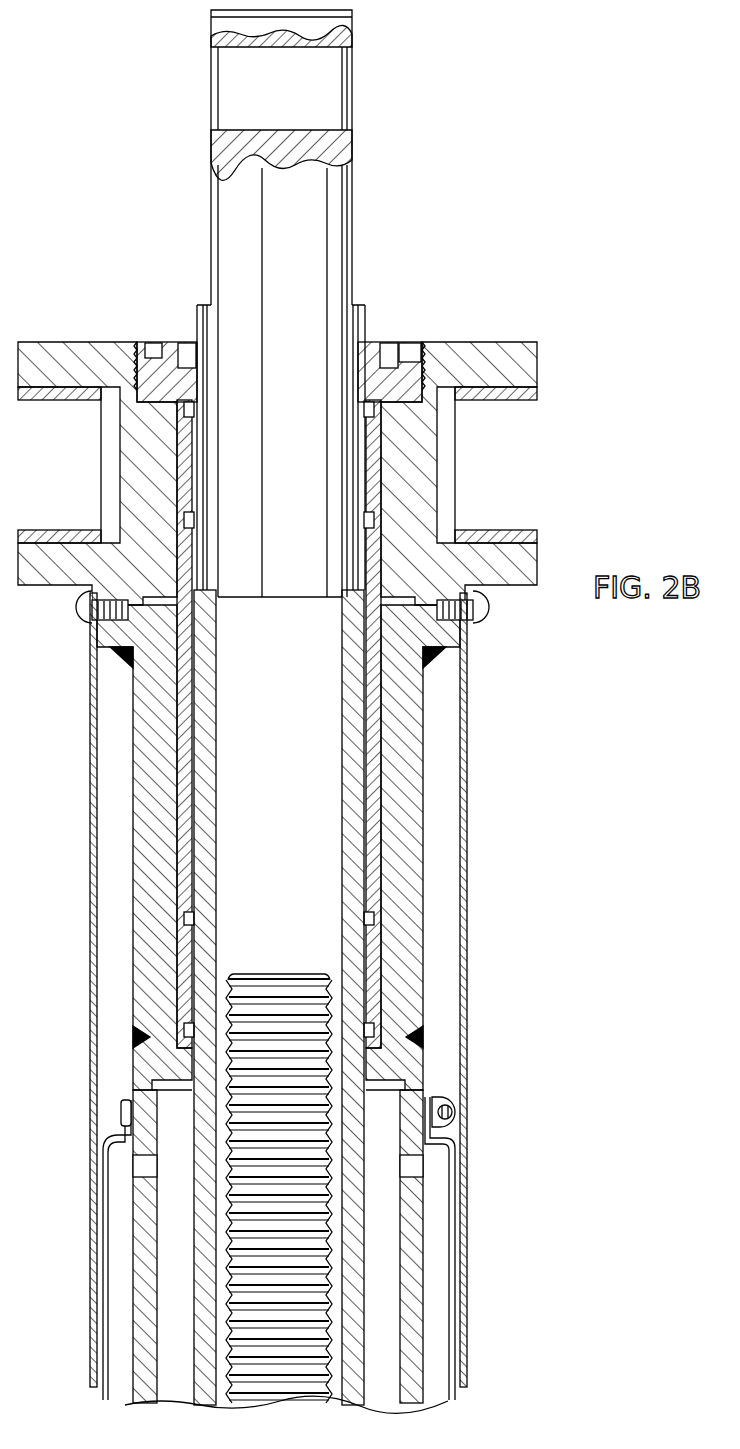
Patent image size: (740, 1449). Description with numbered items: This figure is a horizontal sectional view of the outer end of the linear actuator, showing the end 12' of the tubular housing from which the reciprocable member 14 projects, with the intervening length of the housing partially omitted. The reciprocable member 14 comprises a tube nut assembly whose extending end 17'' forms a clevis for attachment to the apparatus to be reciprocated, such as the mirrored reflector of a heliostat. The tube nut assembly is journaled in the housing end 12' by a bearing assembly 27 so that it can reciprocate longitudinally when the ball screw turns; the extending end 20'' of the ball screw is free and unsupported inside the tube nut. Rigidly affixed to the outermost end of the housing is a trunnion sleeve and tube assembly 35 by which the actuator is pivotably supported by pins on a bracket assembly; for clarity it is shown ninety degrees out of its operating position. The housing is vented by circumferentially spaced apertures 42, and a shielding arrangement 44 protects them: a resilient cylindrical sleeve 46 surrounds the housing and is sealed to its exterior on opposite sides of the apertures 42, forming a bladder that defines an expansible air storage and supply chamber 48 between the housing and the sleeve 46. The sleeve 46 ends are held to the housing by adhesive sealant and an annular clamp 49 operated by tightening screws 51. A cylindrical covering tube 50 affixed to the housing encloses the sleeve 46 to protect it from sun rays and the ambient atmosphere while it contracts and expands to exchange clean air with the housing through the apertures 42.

The reciprocable member 14 is at (330, 251).
The extending end of the tube nut assembly 17'' is at (247, 95).
The end of the housing 12' is at (353, 997).
The extending end of the ball screw 20'' is at (279, 1166).
The bearing assembly 27 is at (182, 971).
The trunnion sleeve and tube assembly 35 is at (500, 588).
The covering tube 50 is at (90, 880).
The shielding arrangement 44 is at (284, 1241).
The expansible air storage and supply chamber 48 is at (120, 1347).
The apertures 42 is at (145, 1165).
The cylindrical sleeve 46 is at (103, 1282).
The annular clamp 49 is at (121, 1115).
The tightening screws 51 is at (453, 1112).